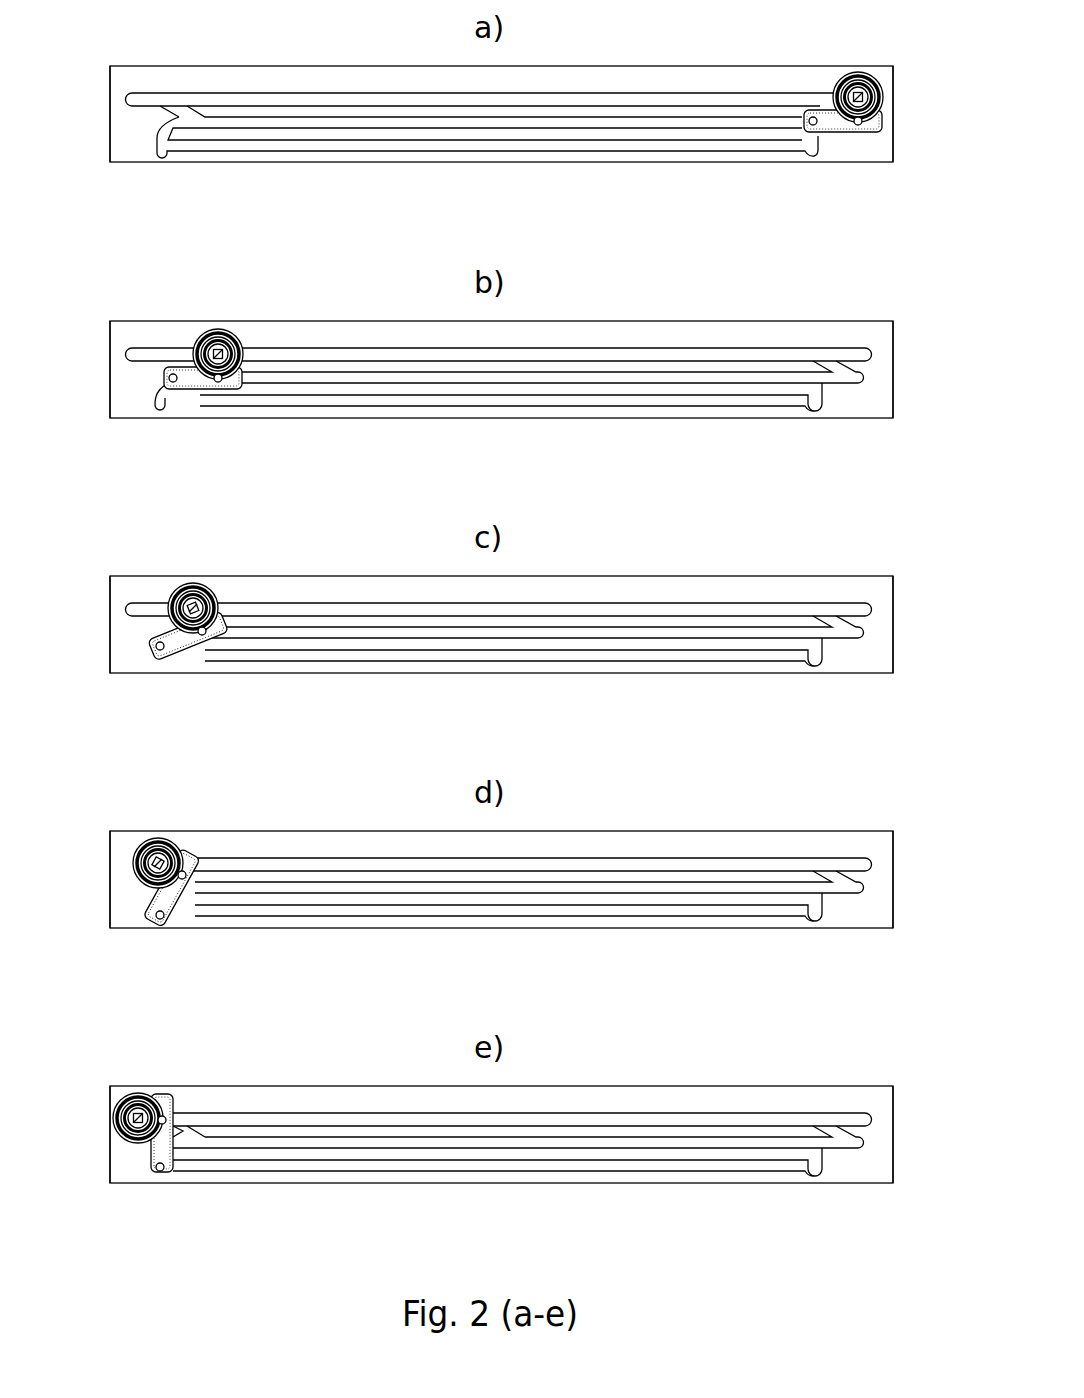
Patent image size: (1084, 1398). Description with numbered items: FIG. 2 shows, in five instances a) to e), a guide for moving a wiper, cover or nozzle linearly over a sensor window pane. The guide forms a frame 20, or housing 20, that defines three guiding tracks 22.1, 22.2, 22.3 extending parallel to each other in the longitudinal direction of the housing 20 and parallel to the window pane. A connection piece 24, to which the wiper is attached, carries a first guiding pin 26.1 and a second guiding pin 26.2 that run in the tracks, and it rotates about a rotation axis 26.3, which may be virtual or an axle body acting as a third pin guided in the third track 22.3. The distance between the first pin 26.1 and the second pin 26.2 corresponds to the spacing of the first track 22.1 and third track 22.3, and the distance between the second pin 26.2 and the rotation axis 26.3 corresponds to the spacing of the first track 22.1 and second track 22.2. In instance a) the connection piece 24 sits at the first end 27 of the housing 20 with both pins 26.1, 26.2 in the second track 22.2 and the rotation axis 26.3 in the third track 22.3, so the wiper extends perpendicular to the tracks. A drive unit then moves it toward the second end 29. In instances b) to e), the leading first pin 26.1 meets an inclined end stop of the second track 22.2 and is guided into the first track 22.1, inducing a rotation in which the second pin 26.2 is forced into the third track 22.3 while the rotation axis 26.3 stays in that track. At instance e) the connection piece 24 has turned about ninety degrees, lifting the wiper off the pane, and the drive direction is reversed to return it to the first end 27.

The frame 20 is at (123, 75).
The first guiding track 22.1 is at (400, 148).
The second guiding track 22.2 is at (320, 118).
The third guiding track 22.3 is at (229, 100).
The connection piece 24 is at (855, 75).
The first guiding pin 26.1 is at (812, 127).
The second guiding pin 26.2 is at (858, 126).
The rotation axis 26.3 is at (866, 84).
The first end 27 is at (897, 140).
The second end 29 is at (109, 113).